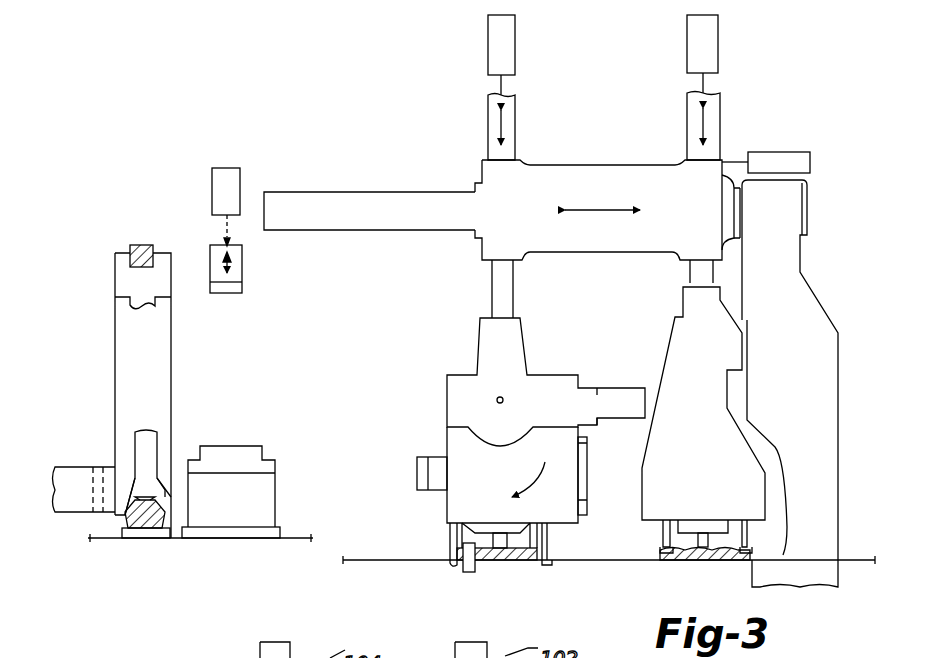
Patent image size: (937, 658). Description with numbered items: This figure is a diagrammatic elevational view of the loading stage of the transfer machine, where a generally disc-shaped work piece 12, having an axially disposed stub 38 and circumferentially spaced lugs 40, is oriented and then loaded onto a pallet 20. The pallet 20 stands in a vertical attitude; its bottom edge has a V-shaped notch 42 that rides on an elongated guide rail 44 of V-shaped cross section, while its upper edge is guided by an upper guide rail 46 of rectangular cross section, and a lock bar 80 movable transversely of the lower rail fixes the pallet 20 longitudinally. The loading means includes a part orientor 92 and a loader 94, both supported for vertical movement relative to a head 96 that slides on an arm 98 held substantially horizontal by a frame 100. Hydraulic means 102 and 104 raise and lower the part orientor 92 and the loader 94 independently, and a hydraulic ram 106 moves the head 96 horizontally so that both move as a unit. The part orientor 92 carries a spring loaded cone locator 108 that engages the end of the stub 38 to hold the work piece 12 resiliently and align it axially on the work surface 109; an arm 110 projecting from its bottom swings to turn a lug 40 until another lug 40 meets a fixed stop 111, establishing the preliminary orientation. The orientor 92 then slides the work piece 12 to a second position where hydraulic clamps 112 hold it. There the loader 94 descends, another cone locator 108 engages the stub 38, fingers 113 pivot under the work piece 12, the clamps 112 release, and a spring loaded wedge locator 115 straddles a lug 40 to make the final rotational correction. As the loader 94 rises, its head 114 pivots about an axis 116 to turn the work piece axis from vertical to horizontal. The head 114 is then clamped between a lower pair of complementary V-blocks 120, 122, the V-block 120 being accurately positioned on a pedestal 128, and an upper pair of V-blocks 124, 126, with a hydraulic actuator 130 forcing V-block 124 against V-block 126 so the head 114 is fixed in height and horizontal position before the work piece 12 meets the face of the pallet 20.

The pallet 20 is at (112, 290).
The upper guide rail 46 is at (144, 246).
The lock bar 80 is at (75, 470).
The V-shaped notch 42 is at (140, 527).
The guide rail 44 is at (155, 528).
The V-block 120 is at (245, 463).
The pedestal 128 is at (225, 528).
The hydraulic actuator 130 is at (232, 172).
The V-block 124 is at (232, 285).
The arm 98 is at (404, 200).
The head 96 is at (600, 185).
The hydraulic means 104 is at (510, 48).
The hydraulic means 102 is at (715, 52).
The hydraulic ram 106 is at (828, 128).
The frame 100 is at (815, 338).
The head 114 is at (447, 458).
The axis 116 is at (503, 398).
The loader 94 is at (460, 500).
The V-block 126 is at (425, 474).
The V-block 122 is at (590, 480).
The spring loaded cone locator 108 is at (507, 530).
The fingers 113 is at (450, 548).
The hydraulic clamps 112 is at (470, 572).
The spring loaded wedge locator 115 is at (550, 530).
The work surface 109 is at (412, 562).
The part orientor 92 is at (712, 482).
The arm 110 is at (657, 518).
The stop 111 is at (748, 535).
The stub 38 is at (663, 547).
The lugs 40 is at (750, 555).
The work piece 12 is at (692, 566).